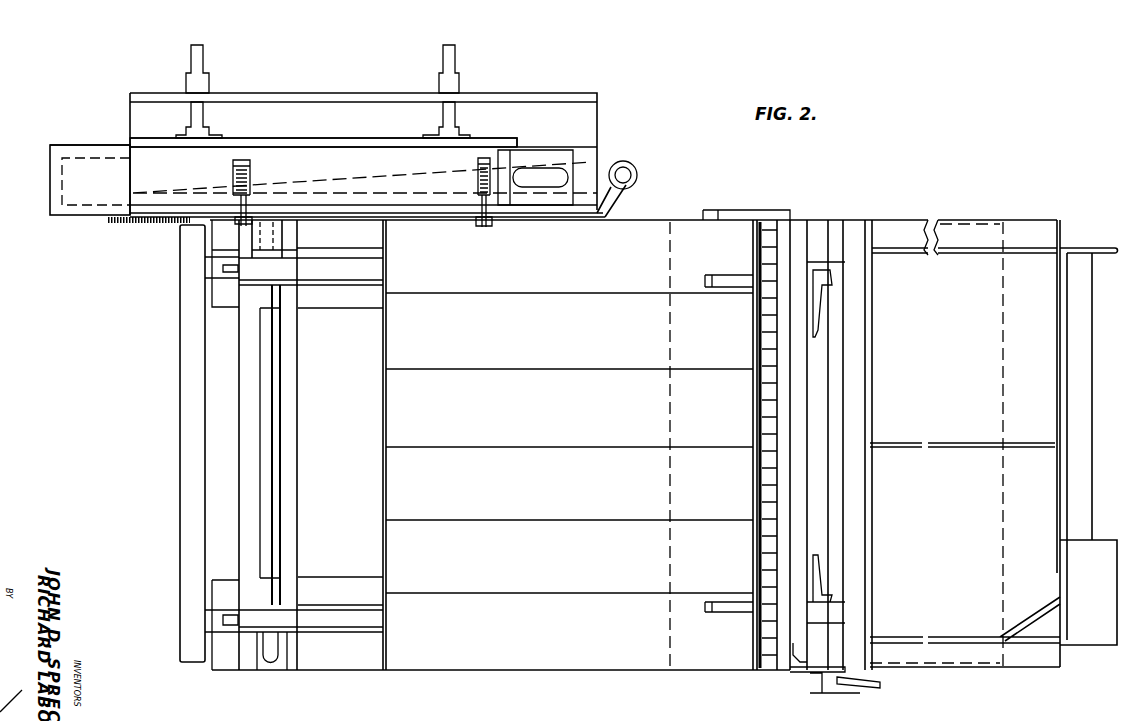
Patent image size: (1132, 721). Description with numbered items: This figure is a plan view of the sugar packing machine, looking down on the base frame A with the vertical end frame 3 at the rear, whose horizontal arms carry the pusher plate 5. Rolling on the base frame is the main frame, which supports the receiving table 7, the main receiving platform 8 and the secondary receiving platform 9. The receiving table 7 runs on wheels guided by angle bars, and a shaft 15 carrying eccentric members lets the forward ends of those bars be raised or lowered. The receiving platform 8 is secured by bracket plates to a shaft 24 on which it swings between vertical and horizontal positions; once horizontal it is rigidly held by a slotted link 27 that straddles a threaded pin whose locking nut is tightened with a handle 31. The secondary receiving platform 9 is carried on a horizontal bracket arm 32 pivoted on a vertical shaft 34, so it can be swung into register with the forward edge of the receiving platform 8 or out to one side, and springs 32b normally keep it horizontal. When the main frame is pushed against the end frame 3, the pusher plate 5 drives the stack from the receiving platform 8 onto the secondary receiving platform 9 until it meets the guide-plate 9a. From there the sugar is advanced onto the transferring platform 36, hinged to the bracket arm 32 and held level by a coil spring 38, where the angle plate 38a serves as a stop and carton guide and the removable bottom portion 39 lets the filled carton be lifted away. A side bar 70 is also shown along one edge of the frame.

The vertical end frame 3 is at (1089, 446).
The pusher plate 5 is at (1056, 370).
The receiving table 7 is at (568, 445).
The receiving platform 8 is at (787, 431).
The secondary receiving platform 9 is at (367, 182).
The guide-plate 9a is at (345, 147).
The shaft 15 is at (272, 449).
The shaft 24 is at (836, 368).
The slotted link 27 is at (808, 673).
The handle 31 is at (880, 686).
The bracket arm 32 is at (622, 192).
The springs 32b is at (251, 164).
The vertical shaft 34 is at (637, 175).
The transferring platform 36 is at (50, 186).
The coil spring 38 is at (120, 224).
The angle plate 38a is at (95, 145).
The removable bottom portion 39 is at (96, 181).
The side bar 70 is at (192, 443).
The base frame A is at (290, 651).